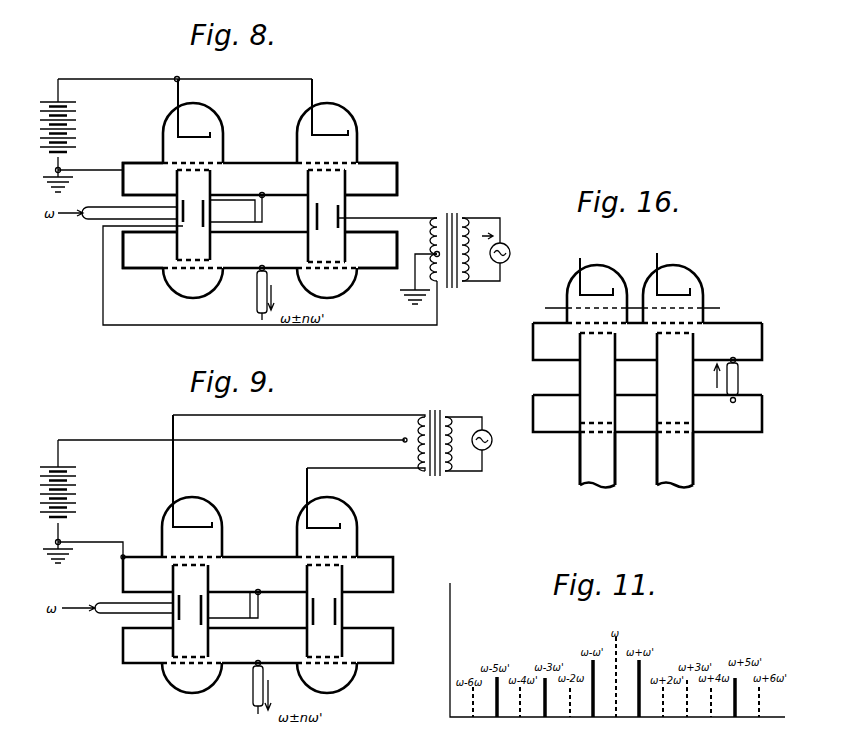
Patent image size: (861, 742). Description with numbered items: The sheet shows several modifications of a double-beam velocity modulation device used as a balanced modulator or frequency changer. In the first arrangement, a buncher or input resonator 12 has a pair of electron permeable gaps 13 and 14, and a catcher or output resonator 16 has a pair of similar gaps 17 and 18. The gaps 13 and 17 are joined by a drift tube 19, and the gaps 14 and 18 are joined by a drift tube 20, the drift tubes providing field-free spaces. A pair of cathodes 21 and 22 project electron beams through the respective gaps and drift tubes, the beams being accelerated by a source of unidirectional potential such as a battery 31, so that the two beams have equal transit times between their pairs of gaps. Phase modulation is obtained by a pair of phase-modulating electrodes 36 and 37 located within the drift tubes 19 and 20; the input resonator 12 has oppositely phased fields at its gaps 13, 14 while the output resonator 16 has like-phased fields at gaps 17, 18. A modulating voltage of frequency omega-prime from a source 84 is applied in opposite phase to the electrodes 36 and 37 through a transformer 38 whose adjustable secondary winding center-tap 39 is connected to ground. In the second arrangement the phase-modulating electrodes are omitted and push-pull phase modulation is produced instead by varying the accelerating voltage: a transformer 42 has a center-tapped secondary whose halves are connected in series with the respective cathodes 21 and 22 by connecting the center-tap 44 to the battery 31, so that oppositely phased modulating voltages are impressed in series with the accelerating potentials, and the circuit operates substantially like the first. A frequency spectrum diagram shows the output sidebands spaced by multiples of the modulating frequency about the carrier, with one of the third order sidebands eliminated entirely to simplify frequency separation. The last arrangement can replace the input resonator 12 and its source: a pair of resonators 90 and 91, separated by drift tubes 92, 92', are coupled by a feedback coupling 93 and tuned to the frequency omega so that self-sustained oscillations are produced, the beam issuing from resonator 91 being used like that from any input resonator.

In FIG. 8, the input resonator 12 is at (398, 181).
In FIG. 9, the input resonator 12 is at (397, 573).
In FIG. 8, the electron permeable gap 13 is at (173, 166).
In FIG. 8, the electron permeable gap 14 is at (350, 172).
In FIG. 8, the output resonator 16 is at (398, 252).
In FIG. 9, the output resonator 16 is at (395, 648).
In FIG. 8, the electron permeable gap 17 is at (172, 268).
In FIG. 8, the electron permeable gap 18 is at (347, 265).
In FIG. 8, the drift tube 19 is at (211, 232).
In FIG. 16, the drift tube 19 is at (616, 458).
In FIG. 8, the drift tube 20 is at (347, 227).
In FIG. 16, the drift tube 20 is at (695, 458).
In FIG. 8, the cathode 21 is at (198, 132).
In FIG. 9, the cathode 21 is at (197, 523).
In FIG. 8, the cathode 22 is at (338, 132).
In FIG. 9, the cathode 22 is at (333, 525).
In FIG. 8, the battery 31 is at (84, 130).
In FIG. 9, the battery 31 is at (77, 498).
In FIG. 8, the phase-modulating electrode 36 is at (211, 184).
In FIG. 8, the phase-modulating electrode 37 is at (335, 203).
In FIG. 8, the transformer 38 is at (451, 213).
In FIG. 8, the secondary winding center-tap 39 is at (435, 255).
In FIG. 9, the transformer 42 is at (436, 412).
In FIG. 9, the center-tap 44 is at (392, 438).
In FIG. 8, the alternating current source 84 is at (510, 253).
In FIG. 9, the alternating current source 84 is at (493, 442).
In FIG. 16, the resonator 90 is at (533, 345).
In FIG. 16, the resonator 91 is at (765, 410).
In FIG. 16, the drift tube 92 is at (587, 371).
In FIG. 16, the drift tube 92' is at (663, 369).
In FIG. 16, the feedback coupling 93 is at (740, 378).